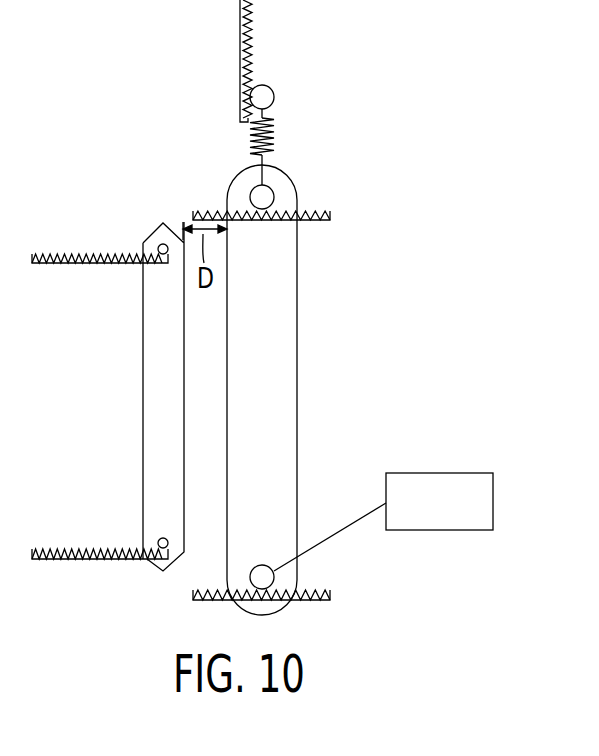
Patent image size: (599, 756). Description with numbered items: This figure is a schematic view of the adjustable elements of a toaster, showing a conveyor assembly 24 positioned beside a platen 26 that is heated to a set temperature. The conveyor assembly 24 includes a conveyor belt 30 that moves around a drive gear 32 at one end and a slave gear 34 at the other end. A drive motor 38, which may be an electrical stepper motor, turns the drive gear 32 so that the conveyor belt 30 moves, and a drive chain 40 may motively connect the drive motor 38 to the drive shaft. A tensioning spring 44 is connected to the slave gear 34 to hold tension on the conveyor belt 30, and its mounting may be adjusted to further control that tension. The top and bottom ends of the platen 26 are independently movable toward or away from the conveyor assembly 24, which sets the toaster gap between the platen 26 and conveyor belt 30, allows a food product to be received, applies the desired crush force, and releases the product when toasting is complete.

The conveyor assembly 24 is at (298, 307).
The platen 26 is at (152, 366).
The conveyor belt 30 is at (297, 271).
The drive gear 32 is at (256, 567).
The slave gear 34 is at (267, 193).
The drive motor 38 is at (493, 500).
The drive chain 40 is at (272, 90).
The tensioning spring 44 is at (268, 133).